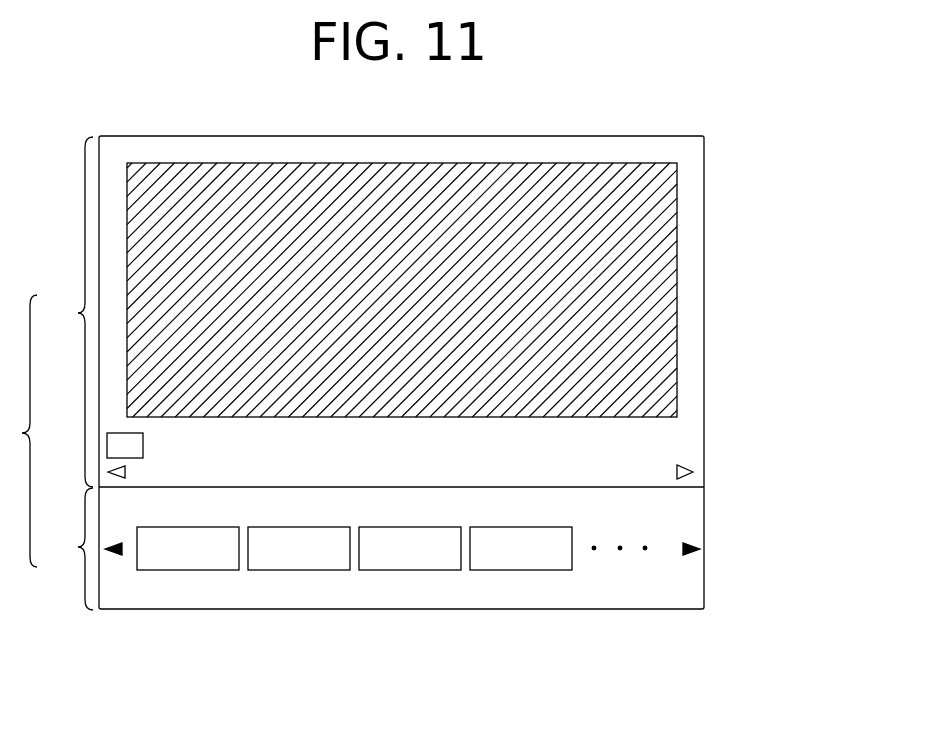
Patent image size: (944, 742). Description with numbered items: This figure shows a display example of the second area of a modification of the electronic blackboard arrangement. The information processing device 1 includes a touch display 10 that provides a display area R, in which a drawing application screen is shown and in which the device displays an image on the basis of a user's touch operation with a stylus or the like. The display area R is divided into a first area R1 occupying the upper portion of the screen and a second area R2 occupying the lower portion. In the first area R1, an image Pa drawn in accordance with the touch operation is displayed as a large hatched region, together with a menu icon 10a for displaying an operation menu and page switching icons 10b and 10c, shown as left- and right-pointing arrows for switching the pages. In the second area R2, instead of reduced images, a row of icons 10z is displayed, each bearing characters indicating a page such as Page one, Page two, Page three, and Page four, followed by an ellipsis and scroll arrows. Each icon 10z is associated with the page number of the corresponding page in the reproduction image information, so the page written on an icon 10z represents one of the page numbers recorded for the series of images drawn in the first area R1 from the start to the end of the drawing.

The information processing device 1 is at (582, 116).
The touch display 10 is at (704, 192).
The image Pa is at (677, 231).
The menu icon 10a is at (143, 437).
The page switching icon 10b is at (125, 472).
The page switching icon 10c is at (690, 469).
The icon 10z is at (210, 570).
The display area R is at (19, 431).
The first area R1 is at (66, 312).
The second area R2 is at (66, 549).